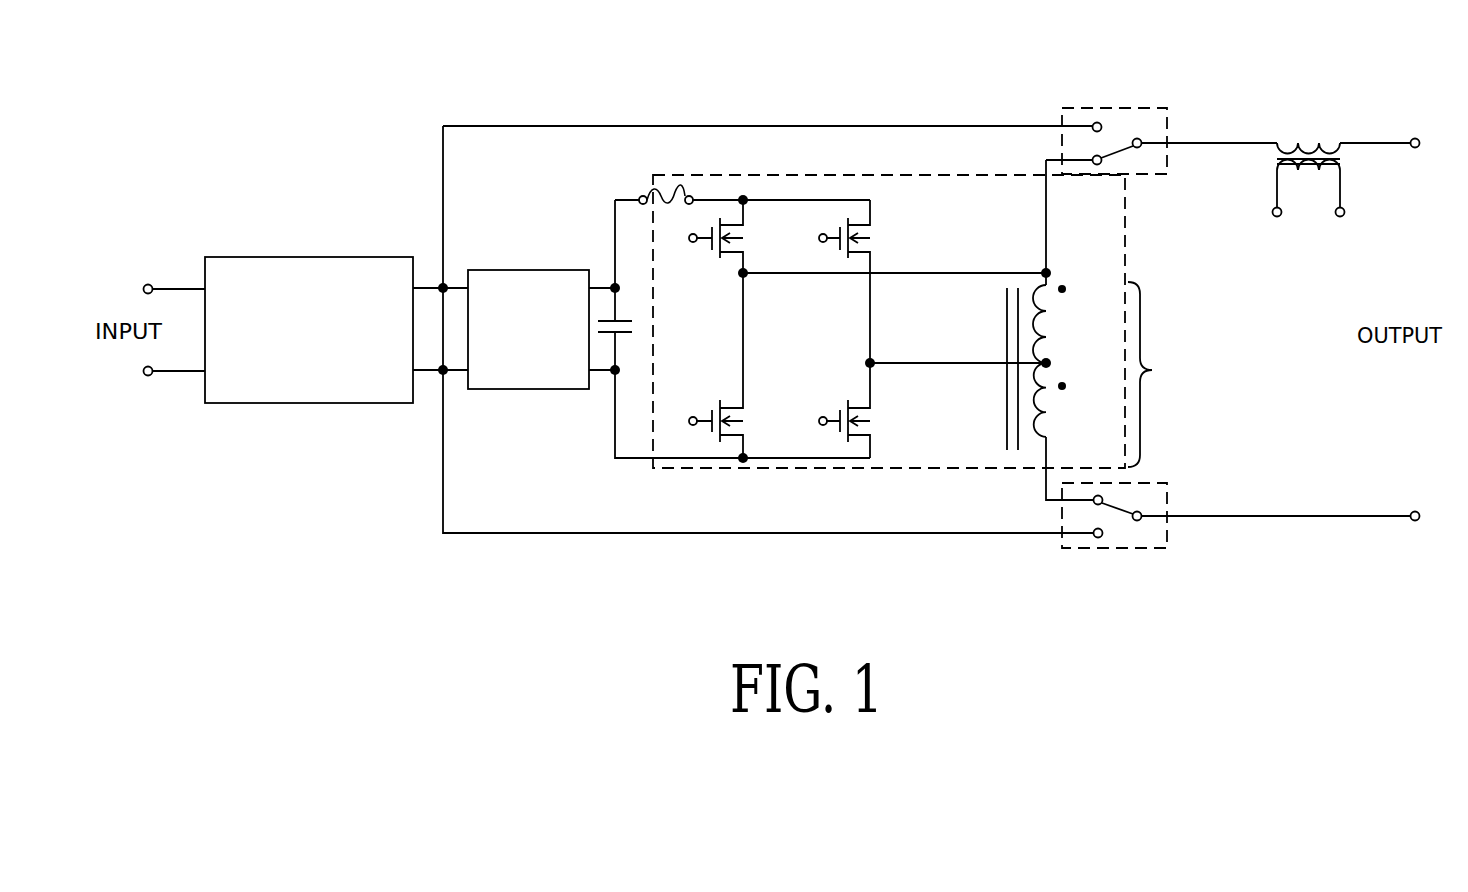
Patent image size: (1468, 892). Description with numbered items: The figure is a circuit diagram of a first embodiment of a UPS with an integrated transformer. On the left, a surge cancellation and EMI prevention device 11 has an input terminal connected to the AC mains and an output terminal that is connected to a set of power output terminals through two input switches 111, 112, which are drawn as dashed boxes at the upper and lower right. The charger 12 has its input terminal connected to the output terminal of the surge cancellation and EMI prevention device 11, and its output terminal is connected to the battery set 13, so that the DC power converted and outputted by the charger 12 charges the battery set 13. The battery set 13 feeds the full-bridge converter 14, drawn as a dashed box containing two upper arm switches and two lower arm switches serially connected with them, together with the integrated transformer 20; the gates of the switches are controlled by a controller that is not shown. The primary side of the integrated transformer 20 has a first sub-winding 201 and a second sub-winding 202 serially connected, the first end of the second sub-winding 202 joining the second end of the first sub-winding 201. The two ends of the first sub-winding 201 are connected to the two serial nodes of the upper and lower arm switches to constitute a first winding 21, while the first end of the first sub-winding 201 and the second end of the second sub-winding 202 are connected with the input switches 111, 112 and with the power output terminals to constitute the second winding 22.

The surge cancellation and EMI prevention device 11 is at (287, 403).
The charger 12 is at (505, 389).
The battery set 13 is at (623, 343).
The full-bridge converter 14 is at (897, 468).
The integrated transformer 20 is at (1033, 251).
The first winding 21 is at (990, 369).
The second winding 22 is at (1163, 374).
The first sub-winding 201 is at (1086, 311).
The second sub-winding 202 is at (1086, 403).
The input switch 111 is at (1097, 108).
The input switch 112 is at (1089, 548).